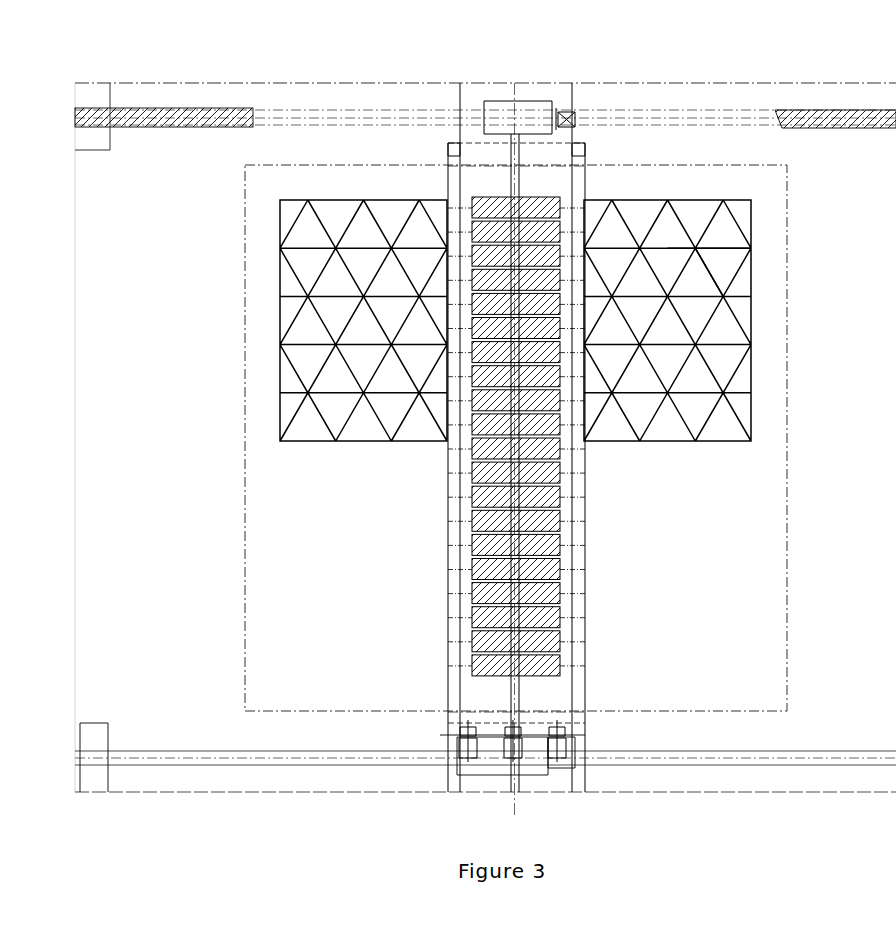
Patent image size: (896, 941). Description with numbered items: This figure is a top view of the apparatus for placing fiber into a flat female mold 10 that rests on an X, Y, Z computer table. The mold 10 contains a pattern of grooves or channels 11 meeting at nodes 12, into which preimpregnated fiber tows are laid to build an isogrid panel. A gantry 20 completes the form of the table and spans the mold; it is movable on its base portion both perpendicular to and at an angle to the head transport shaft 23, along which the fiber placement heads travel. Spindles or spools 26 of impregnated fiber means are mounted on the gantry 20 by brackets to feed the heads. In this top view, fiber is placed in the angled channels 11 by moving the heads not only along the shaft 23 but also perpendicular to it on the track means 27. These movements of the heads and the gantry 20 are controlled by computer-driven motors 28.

The flat female mold 10 is at (719, 384).
The channels 11 is at (710, 273).
The nodes 12 is at (697, 249).
The gantry 20 is at (585, 183).
The head transport shaft 23 is at (505, 700).
The spools 26 is at (538, 680).
The track means 27 is at (820, 128).
The motors 28 is at (568, 112).